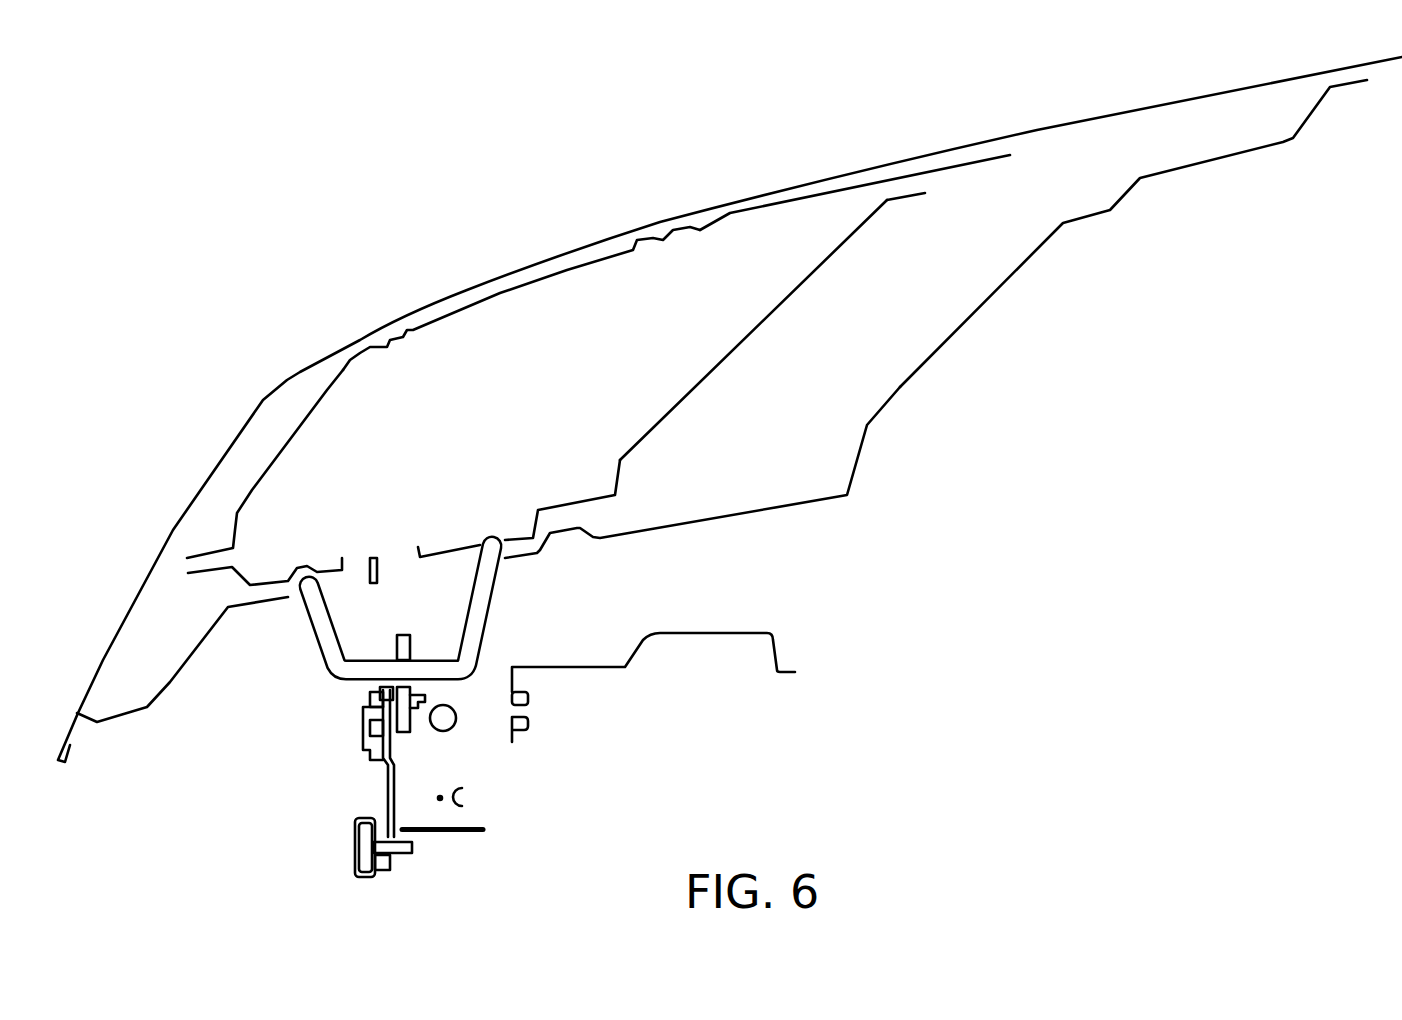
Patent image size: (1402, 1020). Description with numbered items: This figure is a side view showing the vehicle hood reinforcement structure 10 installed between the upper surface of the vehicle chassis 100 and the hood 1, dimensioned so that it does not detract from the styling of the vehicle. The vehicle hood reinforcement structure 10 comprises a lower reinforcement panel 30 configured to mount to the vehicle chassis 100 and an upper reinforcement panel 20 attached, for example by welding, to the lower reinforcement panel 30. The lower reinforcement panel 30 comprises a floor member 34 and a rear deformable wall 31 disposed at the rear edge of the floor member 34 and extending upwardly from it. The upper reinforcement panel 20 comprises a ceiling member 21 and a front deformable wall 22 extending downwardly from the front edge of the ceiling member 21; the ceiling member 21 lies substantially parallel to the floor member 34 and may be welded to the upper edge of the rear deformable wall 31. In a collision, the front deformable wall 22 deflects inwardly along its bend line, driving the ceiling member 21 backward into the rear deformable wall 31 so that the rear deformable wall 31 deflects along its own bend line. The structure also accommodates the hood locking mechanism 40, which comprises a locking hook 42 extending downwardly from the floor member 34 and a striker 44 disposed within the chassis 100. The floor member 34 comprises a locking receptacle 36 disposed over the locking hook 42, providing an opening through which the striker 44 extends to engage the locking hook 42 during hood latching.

The hood 1 is at (730, 395).
The vehicle hood reinforcement structure 10 is at (1133, 233).
The upper reinforcement panel 20 is at (521, 264).
The ceiling member 21 is at (727, 223).
The front deformable wall 22 is at (250, 492).
The lower reinforcement panel 30 is at (715, 366).
The rear deformable wall 31 is at (753, 330).
The floor member 34 is at (268, 582).
The locking receptacle 36 is at (402, 563).
The hood locking mechanism 40 is at (353, 756).
The locking hook 42 is at (307, 628).
The striker 44 is at (402, 733).
The vehicle chassis 100 is at (695, 525).